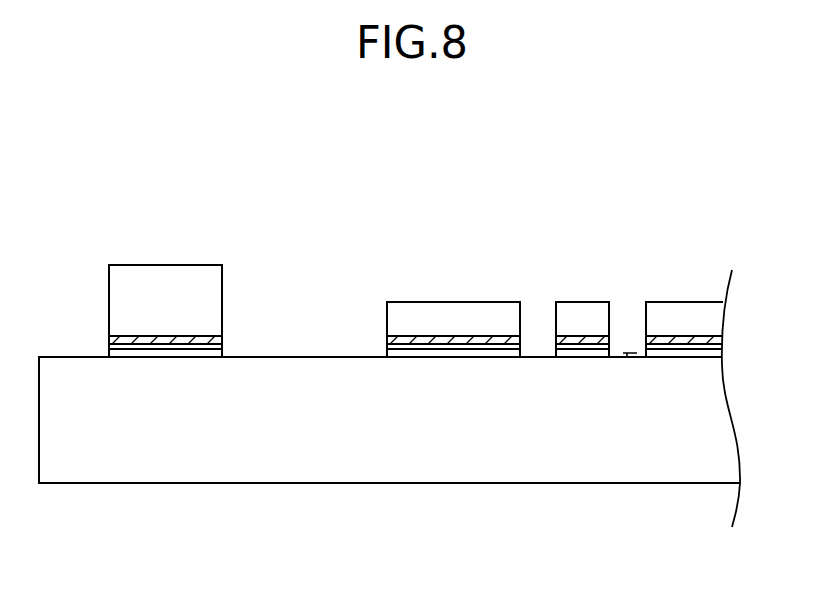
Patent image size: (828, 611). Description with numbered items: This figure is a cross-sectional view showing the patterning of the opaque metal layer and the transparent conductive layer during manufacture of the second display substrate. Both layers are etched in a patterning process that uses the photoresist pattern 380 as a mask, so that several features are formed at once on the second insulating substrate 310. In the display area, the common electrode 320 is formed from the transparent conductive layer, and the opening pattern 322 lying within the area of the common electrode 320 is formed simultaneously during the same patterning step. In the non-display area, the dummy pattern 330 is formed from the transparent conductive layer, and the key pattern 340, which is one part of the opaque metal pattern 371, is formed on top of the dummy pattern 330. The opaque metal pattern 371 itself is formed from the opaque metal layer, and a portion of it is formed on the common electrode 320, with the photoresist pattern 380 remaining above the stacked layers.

The second insulating substrate 310 is at (332, 453).
The common electrode 320 is at (432, 352).
The opening pattern 322 is at (627, 357).
The dummy pattern 330 is at (213, 350).
The key pattern 340 is at (165, 335).
The opaque metal pattern 371 is at (487, 346).
The photoresist pattern 380 is at (134, 323).